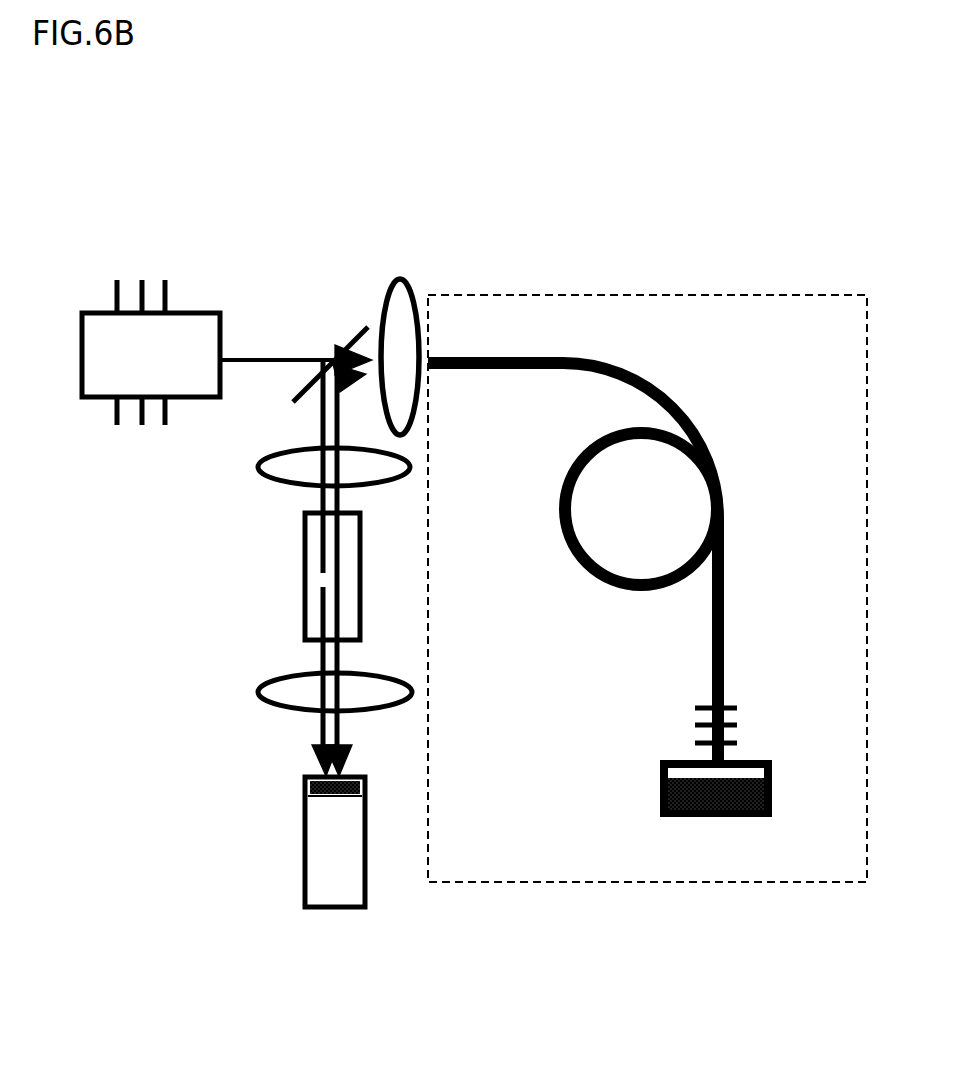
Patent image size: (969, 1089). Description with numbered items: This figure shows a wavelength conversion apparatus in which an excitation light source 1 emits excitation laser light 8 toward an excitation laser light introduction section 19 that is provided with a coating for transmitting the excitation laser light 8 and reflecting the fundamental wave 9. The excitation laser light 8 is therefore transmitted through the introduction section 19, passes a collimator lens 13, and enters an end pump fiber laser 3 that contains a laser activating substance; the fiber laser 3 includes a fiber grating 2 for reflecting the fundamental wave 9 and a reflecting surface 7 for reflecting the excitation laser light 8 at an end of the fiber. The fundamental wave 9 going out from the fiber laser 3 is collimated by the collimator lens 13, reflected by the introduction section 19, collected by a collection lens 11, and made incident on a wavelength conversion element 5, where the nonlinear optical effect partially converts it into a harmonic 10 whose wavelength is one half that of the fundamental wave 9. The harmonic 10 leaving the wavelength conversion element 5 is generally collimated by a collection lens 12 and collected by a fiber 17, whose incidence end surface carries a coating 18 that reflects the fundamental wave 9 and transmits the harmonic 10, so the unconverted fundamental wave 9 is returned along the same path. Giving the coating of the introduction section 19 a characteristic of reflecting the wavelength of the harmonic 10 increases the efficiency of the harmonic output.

The excitation light source 1 is at (87, 428).
The fiber grating 2 is at (770, 725).
The end pump fiber laser 3 is at (693, 270).
The wavelength conversion element 5 is at (277, 540).
The reflecting surface 7 is at (744, 835).
The excitation laser light 8 is at (268, 332).
The fundamental wave 9 is at (360, 412).
The harmonic 10 is at (310, 571).
The collection lens 11 is at (212, 472).
The collection lens 12 is at (413, 640).
The collimator lens 13 is at (424, 310).
The fiber 17 is at (277, 886).
The coating 18 is at (285, 790).
The excitation laser light introduction section 19 is at (335, 314).